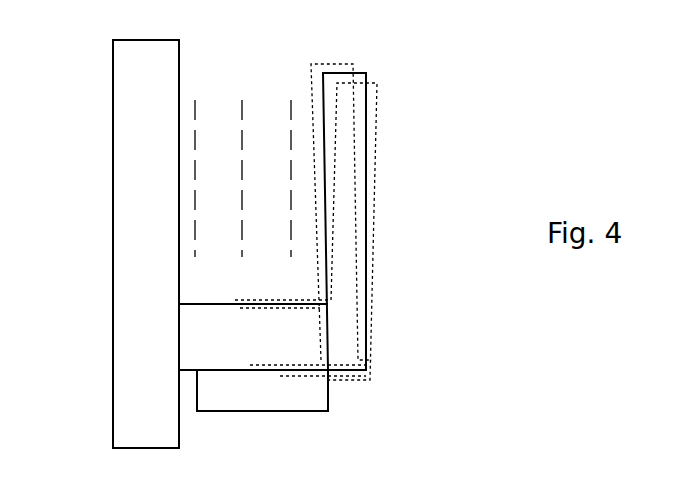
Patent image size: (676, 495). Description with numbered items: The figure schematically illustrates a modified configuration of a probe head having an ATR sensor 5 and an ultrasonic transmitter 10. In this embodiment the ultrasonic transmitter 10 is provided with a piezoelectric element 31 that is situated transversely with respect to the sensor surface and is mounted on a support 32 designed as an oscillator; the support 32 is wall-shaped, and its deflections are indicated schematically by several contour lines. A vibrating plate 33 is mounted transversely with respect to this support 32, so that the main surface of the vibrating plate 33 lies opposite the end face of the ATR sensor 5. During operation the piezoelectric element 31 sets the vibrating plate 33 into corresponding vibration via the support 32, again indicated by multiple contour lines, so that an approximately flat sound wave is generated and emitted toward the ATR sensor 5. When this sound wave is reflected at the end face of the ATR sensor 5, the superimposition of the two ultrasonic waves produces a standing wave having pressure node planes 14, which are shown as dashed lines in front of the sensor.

The ATR sensor 5 is at (145, 108).
The ultrasonic transmitter 10 is at (398, 368).
The pressure node planes 14 is at (287, 108).
The piezoelectric element 31 is at (290, 393).
The support 32 is at (242, 343).
The vibrating plate 33 is at (345, 267).